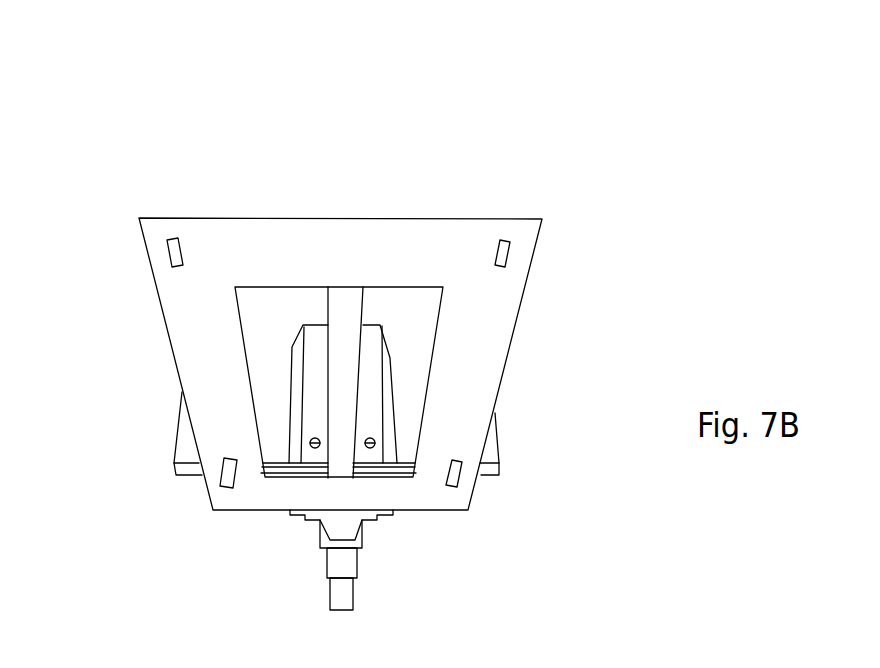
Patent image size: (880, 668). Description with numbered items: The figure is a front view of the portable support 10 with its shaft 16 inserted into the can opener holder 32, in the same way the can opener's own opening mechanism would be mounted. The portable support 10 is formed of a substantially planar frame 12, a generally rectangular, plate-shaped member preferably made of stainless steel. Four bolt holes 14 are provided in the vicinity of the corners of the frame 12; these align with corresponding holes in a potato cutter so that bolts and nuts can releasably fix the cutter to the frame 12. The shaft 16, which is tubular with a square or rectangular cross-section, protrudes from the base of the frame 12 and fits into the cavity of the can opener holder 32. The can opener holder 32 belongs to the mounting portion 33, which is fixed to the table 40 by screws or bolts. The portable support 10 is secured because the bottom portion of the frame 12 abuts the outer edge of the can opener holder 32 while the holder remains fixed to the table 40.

The portable support 10 is at (188, 122).
The frame 12 is at (502, 313).
The bolt holes 14 is at (492, 250).
The shaft 16 is at (328, 603).
The can opener holder 32 is at (330, 560).
The mounting portion 33 is at (312, 348).
The table 40 is at (500, 450).